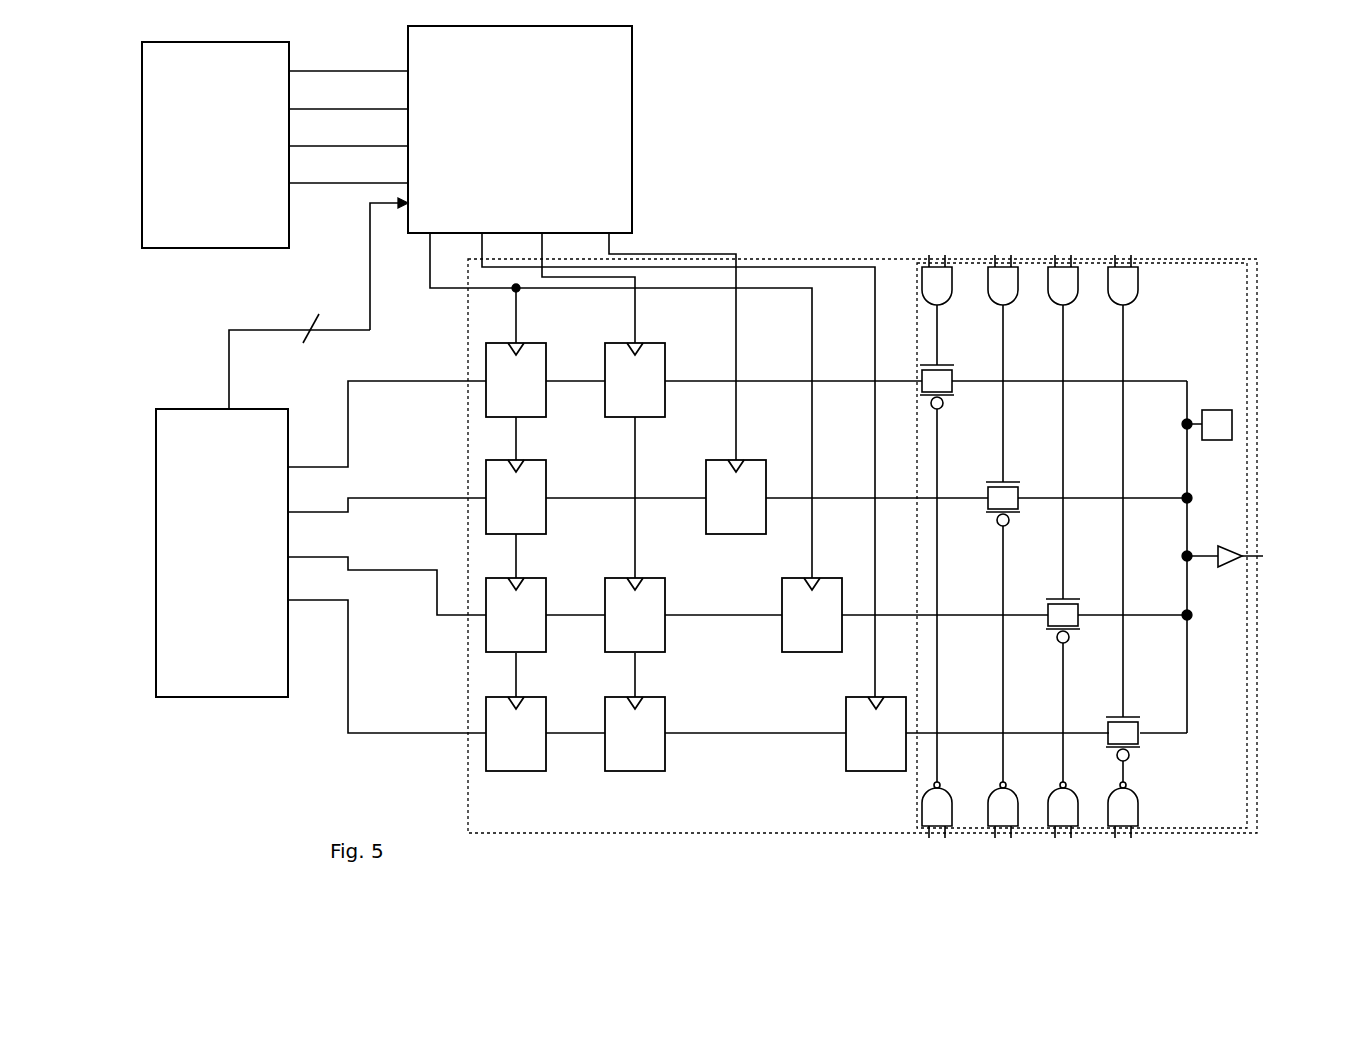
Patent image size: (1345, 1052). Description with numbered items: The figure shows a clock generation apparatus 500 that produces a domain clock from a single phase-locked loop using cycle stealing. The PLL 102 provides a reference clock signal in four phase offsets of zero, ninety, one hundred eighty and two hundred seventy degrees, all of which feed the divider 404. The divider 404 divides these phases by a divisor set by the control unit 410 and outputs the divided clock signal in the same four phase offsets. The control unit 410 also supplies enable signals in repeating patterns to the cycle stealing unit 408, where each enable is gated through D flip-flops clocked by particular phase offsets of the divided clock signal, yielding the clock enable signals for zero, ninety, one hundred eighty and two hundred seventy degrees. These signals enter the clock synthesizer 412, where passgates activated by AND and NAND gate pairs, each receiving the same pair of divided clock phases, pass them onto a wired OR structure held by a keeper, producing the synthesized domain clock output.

The clock generation apparatus 500 is at (887, 86).
The PLL 102 is at (198, 164).
The divider 404 is at (503, 151).
The control unit 410 is at (186, 689).
The cycle stealing unit 408 is at (759, 787).
The clock synthesizer 412 is at (1211, 794).